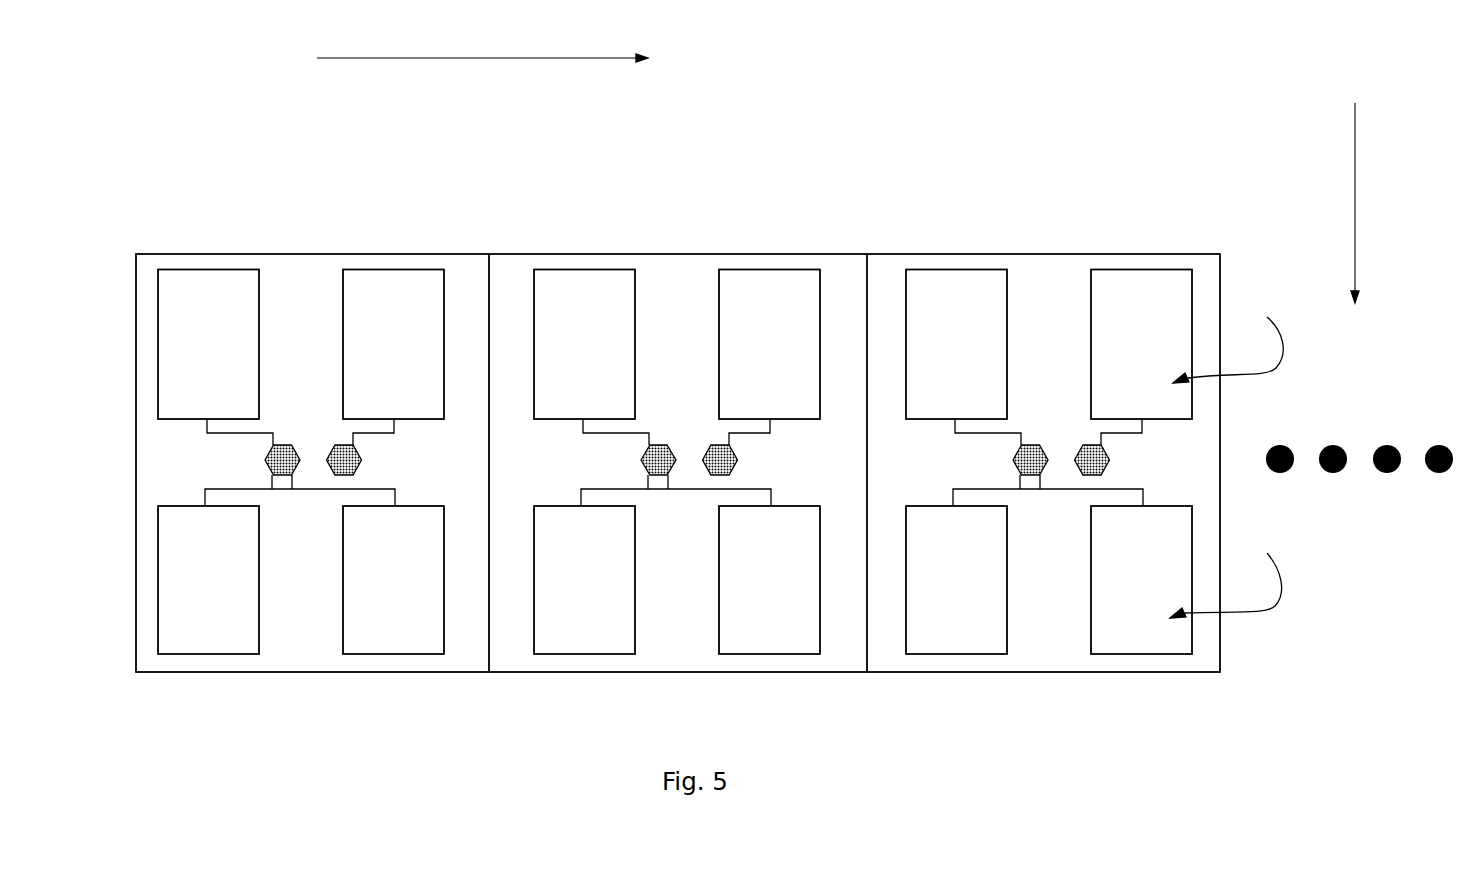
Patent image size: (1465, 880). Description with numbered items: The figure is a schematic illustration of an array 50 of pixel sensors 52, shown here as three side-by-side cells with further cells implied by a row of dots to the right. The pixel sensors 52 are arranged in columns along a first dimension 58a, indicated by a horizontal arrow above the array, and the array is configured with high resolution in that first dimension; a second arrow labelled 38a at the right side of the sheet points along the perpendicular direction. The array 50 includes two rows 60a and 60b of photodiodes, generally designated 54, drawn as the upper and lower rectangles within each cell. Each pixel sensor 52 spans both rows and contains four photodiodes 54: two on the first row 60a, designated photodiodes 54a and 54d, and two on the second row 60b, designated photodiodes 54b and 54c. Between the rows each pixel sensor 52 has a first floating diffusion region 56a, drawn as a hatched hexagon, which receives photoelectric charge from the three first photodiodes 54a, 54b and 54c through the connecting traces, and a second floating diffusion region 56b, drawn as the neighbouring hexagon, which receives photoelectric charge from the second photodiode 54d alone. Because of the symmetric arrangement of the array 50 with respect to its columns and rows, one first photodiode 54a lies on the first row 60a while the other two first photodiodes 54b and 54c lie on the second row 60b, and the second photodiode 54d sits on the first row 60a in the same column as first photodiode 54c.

The array 50 is at (720, 226).
The pixel sensor 52 is at (300, 292).
The photodiodes 54 is at (947, 283).
The photodiode 54a is at (176, 340).
The photodiode 54b is at (188, 604).
The photodiode 54c is at (385, 602).
The photodiode 54d is at (394, 322).
The first floating diffusion region 56a is at (263, 452).
The second floating diffusion region 56b is at (333, 456).
The first dimension 58a is at (474, 46).
The column direction arrow 38a is at (1369, 203).
The first row 60a is at (1233, 337).
The second row 60b is at (1226, 574).